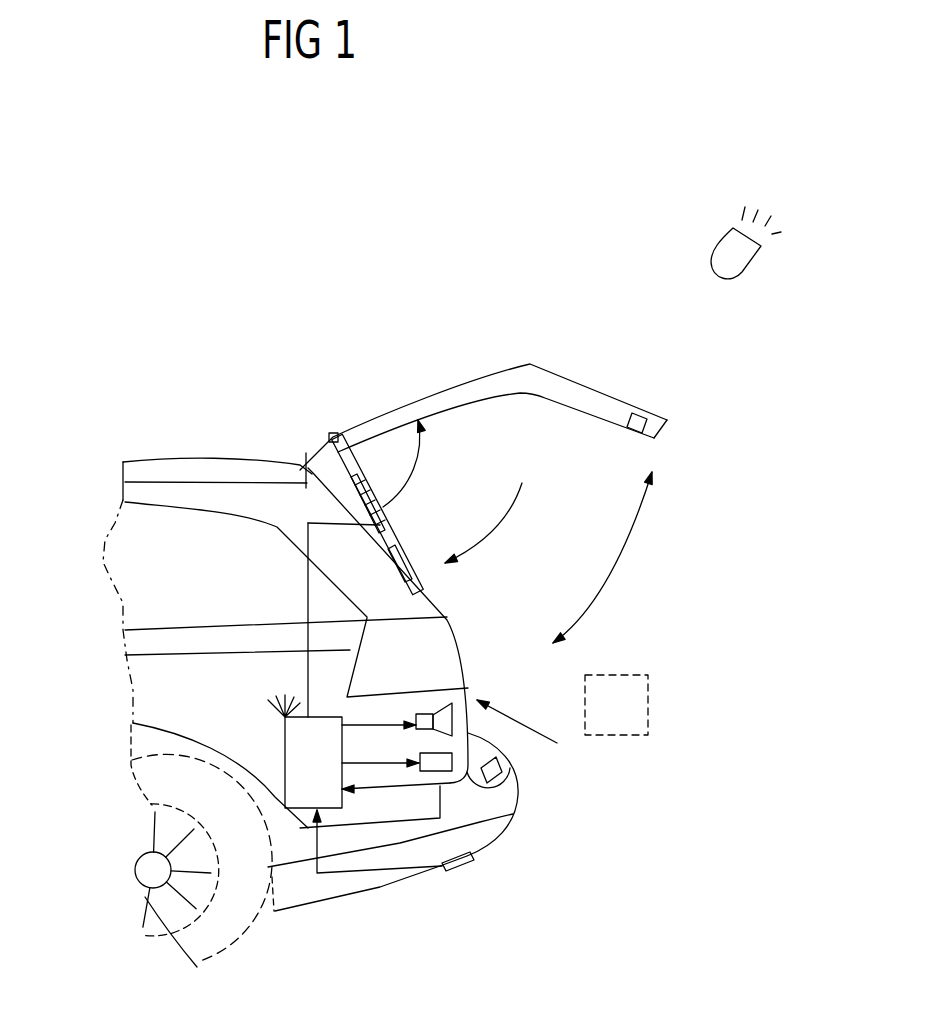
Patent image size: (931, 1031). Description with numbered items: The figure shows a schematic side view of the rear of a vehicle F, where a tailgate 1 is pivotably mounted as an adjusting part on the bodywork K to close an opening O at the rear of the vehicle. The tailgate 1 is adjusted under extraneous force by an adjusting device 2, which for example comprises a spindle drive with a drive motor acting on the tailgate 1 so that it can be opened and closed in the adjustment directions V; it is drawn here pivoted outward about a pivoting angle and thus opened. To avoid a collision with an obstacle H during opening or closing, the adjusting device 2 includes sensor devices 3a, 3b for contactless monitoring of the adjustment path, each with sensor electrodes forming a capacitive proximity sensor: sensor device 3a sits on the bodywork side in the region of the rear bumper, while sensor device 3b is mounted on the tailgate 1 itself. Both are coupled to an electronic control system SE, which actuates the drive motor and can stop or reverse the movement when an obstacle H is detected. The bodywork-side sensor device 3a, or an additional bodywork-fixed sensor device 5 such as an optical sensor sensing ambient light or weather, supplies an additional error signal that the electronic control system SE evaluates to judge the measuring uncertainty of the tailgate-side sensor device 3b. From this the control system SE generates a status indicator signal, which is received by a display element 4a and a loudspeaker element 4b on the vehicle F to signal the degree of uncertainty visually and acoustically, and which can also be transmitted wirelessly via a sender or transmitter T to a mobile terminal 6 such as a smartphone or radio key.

The tailgate 1 is at (602, 403).
The adjusting device 2 is at (363, 453).
The sensor device 3a is at (503, 780).
The sensor device 3b is at (645, 418).
The display element 4a is at (435, 766).
The loudspeaker element 4b is at (450, 707).
The additional sensor device 5 is at (453, 869).
The mobile terminal 6 is at (732, 248).
The bodywork K is at (115, 472).
The electronic control system SE is at (367, 786).
The sender/transmitter T is at (280, 713).
The obstacle H is at (637, 692).
The vehicle F is at (524, 721).
The bodywork opening O is at (495, 509).
The adjustment direction V is at (602, 557).